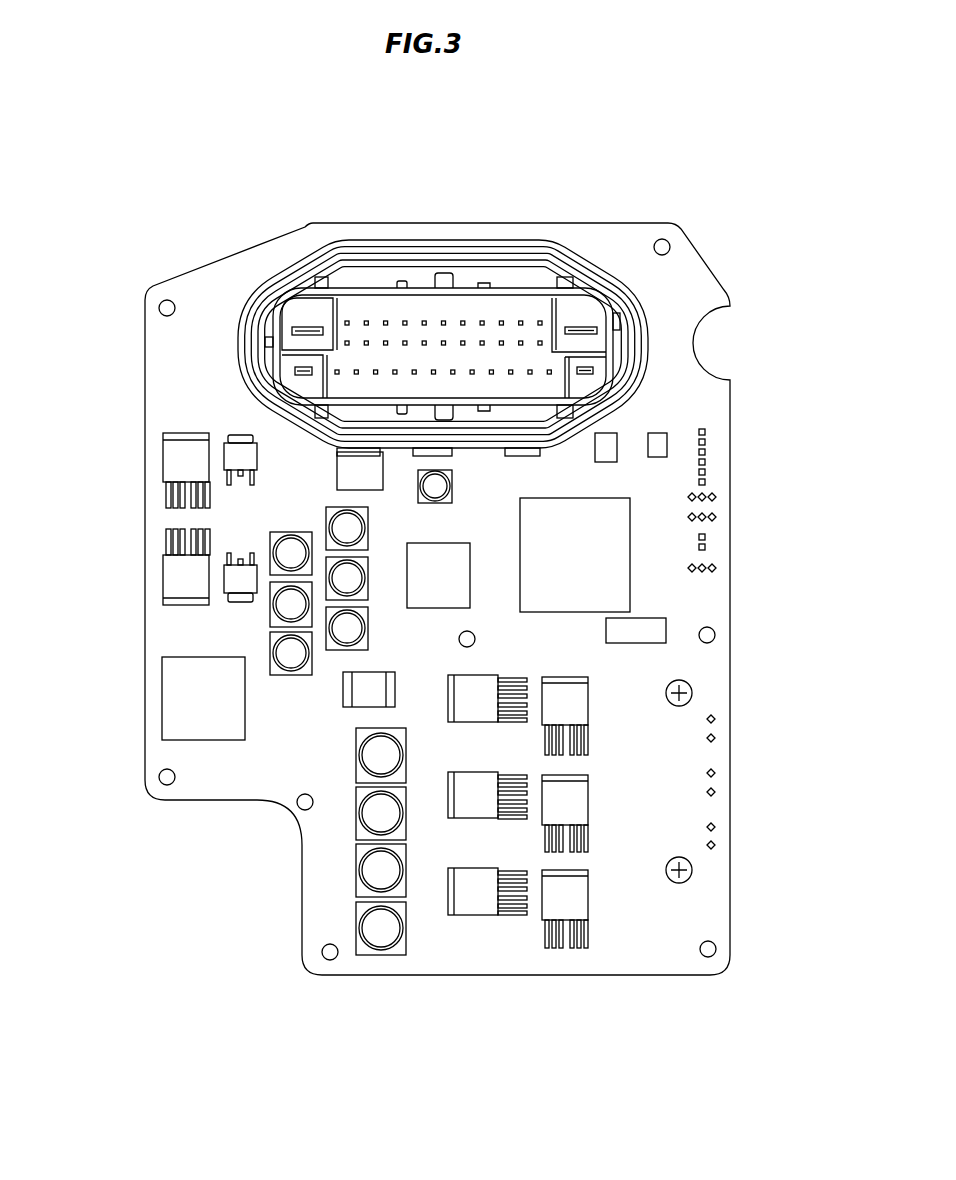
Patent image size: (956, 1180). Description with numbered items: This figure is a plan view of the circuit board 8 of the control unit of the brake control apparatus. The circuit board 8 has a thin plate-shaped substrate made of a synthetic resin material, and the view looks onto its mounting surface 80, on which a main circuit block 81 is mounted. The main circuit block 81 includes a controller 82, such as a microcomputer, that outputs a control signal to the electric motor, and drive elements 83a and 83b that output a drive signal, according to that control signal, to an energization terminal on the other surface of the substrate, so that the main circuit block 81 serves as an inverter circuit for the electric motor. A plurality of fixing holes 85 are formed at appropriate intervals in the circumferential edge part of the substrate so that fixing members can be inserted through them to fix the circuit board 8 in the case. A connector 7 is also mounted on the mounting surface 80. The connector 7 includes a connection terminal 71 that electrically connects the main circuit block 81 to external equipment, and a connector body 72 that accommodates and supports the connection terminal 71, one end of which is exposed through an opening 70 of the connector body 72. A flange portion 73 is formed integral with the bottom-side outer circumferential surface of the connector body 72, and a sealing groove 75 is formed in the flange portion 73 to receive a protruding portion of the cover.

The connector 7 is at (657, 293).
The circuit board 8 is at (223, 905).
The opening 70 is at (300, 300).
The connection terminal 71 is at (426, 342).
The connector body 72 is at (577, 278).
The flange portion 73 is at (365, 240).
The sealing groove 75 is at (263, 268).
The mounting surface 80 is at (165, 372).
The main circuit block 81 is at (657, 597).
The controller 82 is at (455, 543).
The drive element 83a is at (600, 673).
The drive element 83b is at (143, 430).
The fixing holes 85 is at (166, 302).